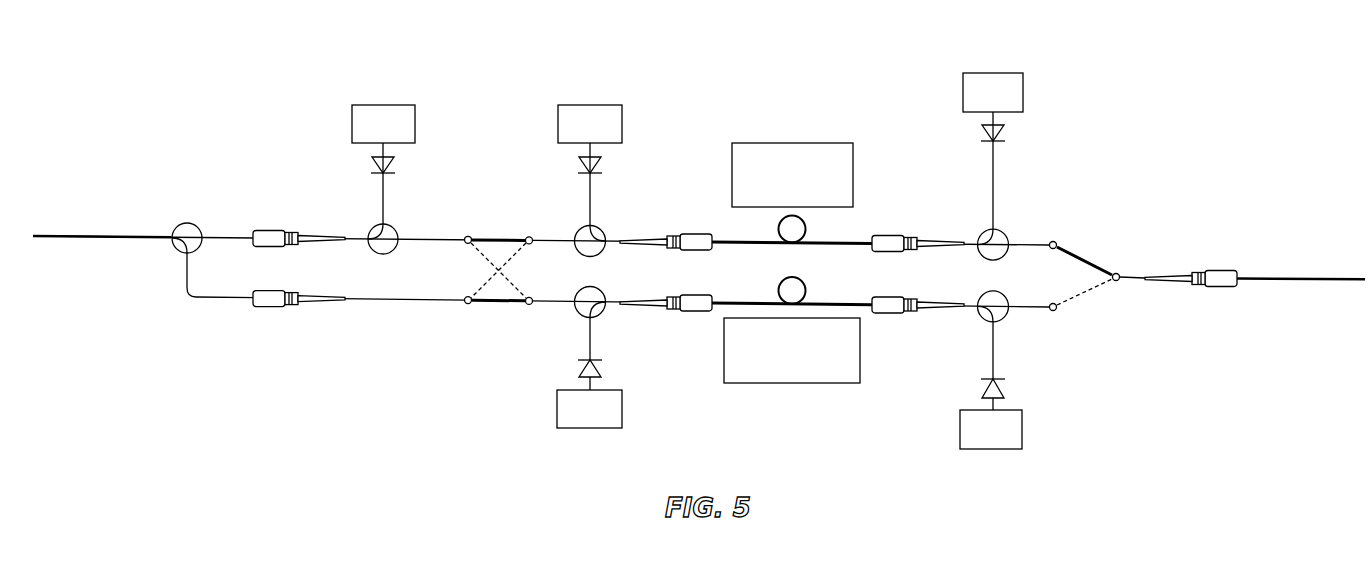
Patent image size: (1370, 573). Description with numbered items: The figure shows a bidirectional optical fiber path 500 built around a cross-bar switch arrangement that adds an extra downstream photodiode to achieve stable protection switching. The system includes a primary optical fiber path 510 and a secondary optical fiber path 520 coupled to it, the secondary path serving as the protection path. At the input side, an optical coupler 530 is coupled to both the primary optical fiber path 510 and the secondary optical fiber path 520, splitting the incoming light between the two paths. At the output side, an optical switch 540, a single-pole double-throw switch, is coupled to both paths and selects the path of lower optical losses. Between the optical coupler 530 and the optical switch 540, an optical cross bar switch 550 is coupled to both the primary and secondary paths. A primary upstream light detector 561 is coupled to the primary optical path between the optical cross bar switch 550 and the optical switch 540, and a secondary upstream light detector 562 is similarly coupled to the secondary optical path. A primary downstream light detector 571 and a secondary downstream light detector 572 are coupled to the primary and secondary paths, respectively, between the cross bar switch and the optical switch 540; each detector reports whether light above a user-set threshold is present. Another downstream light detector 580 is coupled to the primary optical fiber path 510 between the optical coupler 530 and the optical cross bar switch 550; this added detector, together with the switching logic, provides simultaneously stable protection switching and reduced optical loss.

The bidirectional optical fiber path 500 is at (665, 48).
The primary optical fiber path 510 is at (748, 240).
The secondary optical fiber path 520 is at (722, 307).
The optical coupler 530 is at (182, 222).
The optical switch 540 is at (1093, 263).
The optical cross bar switch 550 is at (494, 306).
The primary upstream light detector 561 is at (589, 104).
The secondary upstream light detector 562 is at (556, 410).
The primary downstream light detector 571 is at (996, 72).
The secondary downstream light detector 572 is at (958, 432).
The downstream light detector 580 is at (380, 104).